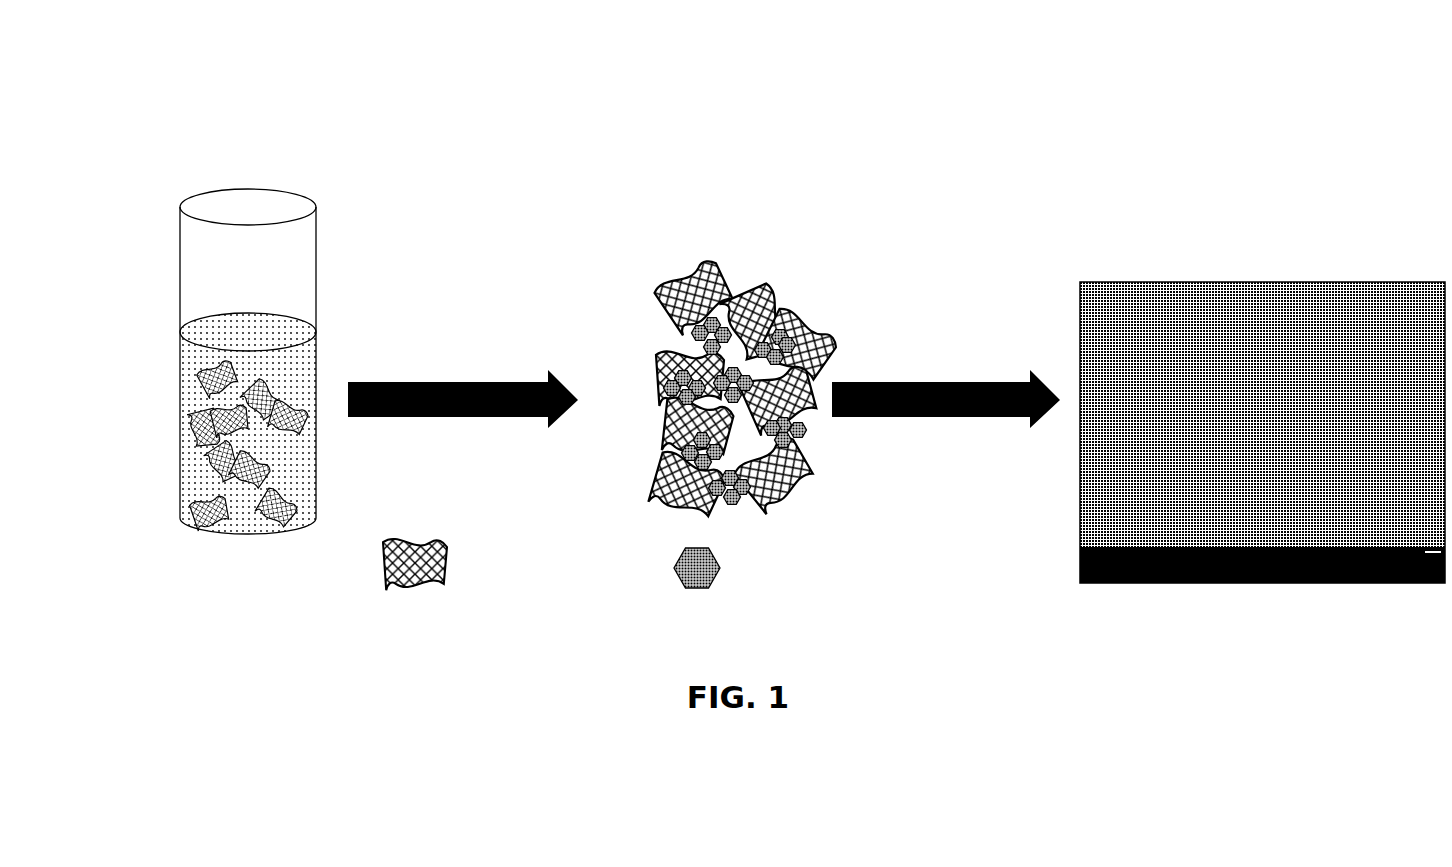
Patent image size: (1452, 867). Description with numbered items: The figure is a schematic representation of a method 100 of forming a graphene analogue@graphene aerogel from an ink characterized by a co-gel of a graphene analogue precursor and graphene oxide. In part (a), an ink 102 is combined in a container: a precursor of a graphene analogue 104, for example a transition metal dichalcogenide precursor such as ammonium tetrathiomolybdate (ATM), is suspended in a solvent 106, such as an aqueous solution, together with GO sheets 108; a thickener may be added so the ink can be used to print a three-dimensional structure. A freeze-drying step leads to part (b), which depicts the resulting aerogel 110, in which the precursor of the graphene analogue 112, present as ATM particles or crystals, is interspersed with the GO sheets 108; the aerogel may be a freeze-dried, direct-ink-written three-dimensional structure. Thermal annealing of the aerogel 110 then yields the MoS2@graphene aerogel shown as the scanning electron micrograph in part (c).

The method 100 is at (222, 64).
The ink 102 is at (165, 240).
The precursor of a graphene analogue 104 is at (300, 368).
The solvent 106 is at (248, 332).
The GO sheets 108 is at (188, 420).
The aerogel 110 is at (627, 244).
The precursor of the graphene analogue 112 is at (694, 333).